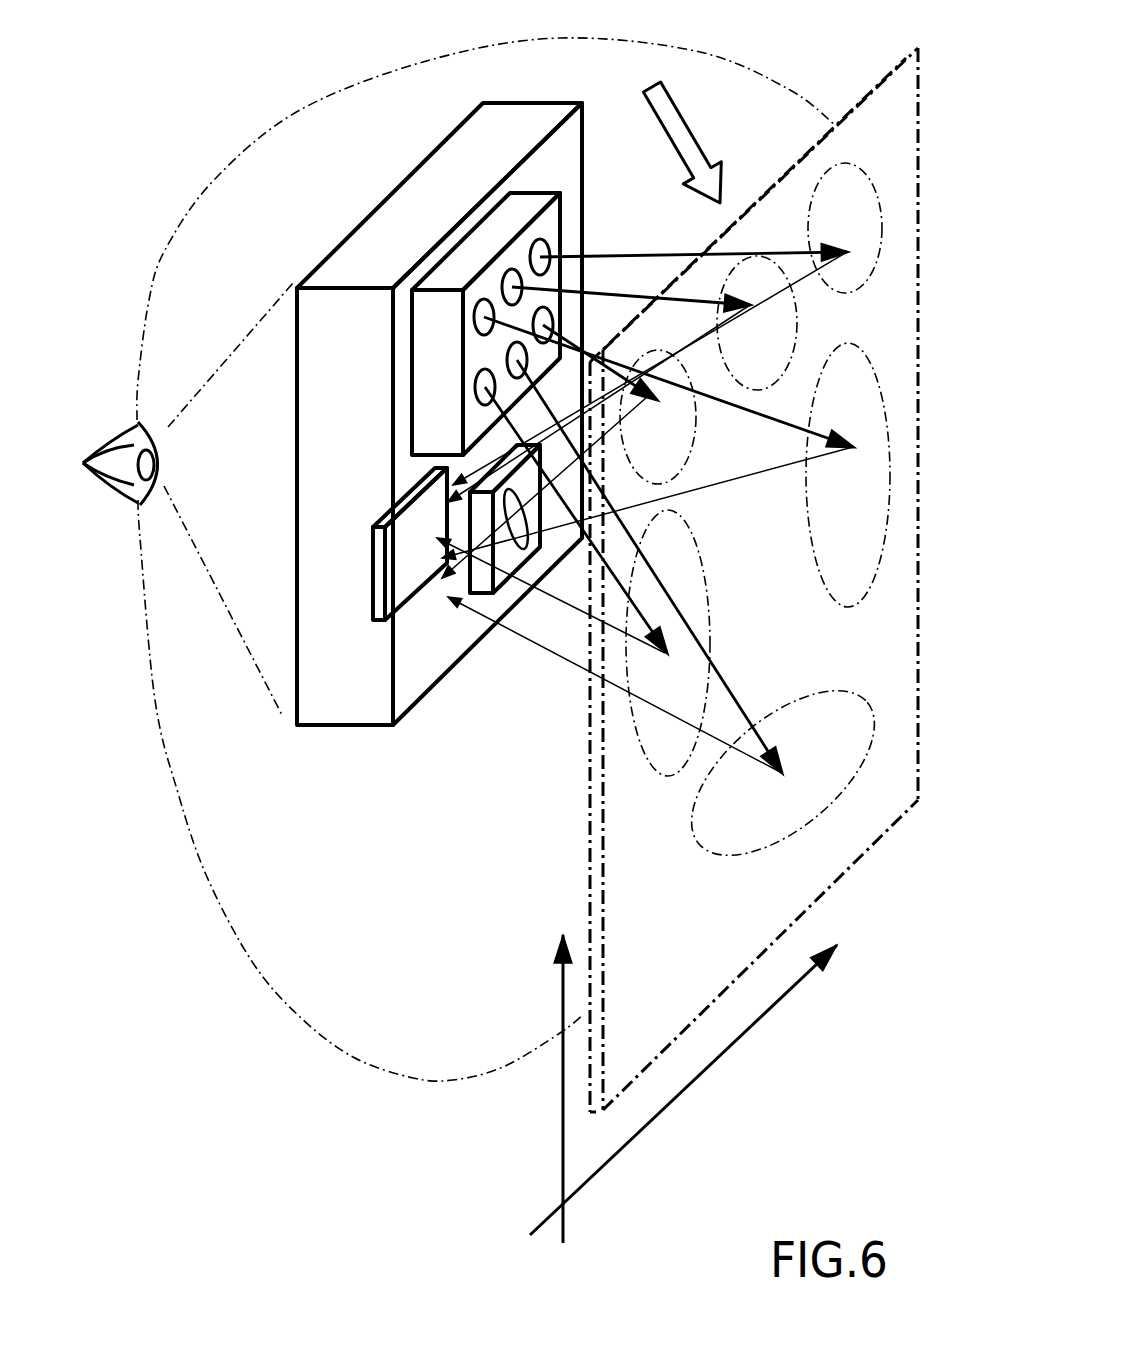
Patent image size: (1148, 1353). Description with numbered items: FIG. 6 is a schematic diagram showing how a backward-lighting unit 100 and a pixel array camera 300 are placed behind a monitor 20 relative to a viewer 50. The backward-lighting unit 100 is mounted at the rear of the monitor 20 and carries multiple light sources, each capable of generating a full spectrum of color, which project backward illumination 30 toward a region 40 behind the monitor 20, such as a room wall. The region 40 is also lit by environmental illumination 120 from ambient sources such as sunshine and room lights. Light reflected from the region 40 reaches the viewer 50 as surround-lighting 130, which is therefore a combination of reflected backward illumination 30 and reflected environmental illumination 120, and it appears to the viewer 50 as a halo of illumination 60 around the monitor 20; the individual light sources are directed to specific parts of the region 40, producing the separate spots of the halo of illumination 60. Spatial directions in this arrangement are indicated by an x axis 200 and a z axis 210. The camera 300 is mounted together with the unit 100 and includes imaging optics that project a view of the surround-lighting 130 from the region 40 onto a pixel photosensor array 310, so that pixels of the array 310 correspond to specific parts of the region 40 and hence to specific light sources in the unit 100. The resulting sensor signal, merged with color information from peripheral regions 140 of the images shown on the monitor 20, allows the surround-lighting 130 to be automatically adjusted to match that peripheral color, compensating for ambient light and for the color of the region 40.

The monitor 20 is at (354, 454).
The backward-lighting unit 100 is at (502, 232).
The pixel array camera 300 is at (503, 567).
The pixel photosensor array 310 is at (410, 562).
The backward illumination 30 is at (630, 257).
The environmental illumination 120 is at (727, 142).
The region behind the monitor 40 is at (756, 561).
The halo of illumination 60 is at (861, 214).
The viewer 50 is at (107, 420).
The surround-lighting 130 is at (175, 241).
The peripheral regions of the monitor 140 is at (229, 357).
The z axis 210 is at (560, 1105).
The x axis 200 is at (690, 1088).